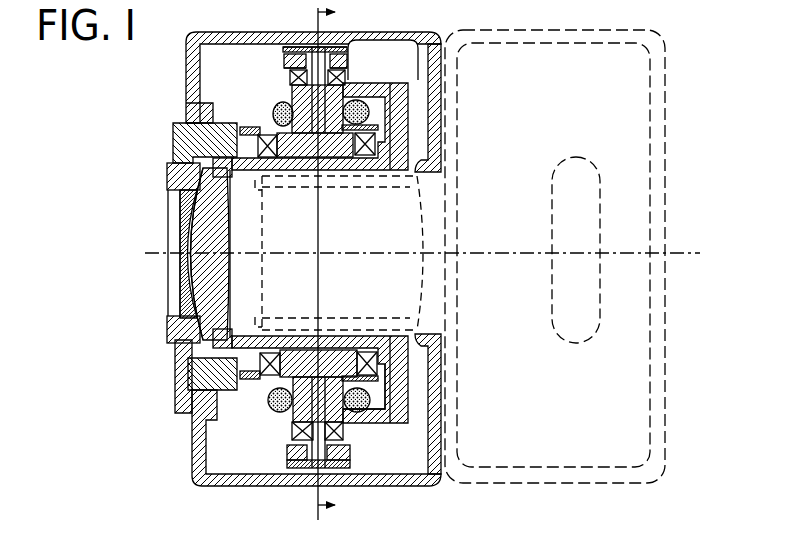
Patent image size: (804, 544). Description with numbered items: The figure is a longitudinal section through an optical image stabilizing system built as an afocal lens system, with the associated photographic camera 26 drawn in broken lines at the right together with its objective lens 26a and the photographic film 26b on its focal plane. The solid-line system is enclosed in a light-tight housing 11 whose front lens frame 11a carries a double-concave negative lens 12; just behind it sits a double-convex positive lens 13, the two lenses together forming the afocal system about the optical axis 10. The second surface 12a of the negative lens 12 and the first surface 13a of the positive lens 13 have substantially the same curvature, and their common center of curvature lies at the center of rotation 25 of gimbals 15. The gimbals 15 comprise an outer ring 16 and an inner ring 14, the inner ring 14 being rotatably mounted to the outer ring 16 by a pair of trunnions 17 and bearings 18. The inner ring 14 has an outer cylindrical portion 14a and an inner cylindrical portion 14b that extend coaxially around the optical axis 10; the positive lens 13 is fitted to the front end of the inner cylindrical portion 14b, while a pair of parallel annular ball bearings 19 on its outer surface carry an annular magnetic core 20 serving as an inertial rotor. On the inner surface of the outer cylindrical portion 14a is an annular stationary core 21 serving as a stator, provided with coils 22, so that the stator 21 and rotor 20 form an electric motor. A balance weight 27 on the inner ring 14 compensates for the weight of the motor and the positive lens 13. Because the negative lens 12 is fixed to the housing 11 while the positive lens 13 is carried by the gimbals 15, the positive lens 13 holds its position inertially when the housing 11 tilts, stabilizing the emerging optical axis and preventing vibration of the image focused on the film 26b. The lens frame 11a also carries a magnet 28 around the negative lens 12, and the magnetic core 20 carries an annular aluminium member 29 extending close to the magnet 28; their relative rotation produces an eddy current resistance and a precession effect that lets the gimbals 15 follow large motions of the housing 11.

The optical axis 10 is at (467, 252).
The light-tight housing 11 is at (417, 33).
The front lens frame 11a is at (186, 108).
The negative lens 12 is at (181, 240).
The second surface of the negative lens 12a is at (190, 218).
The positive lens 13 is at (212, 305).
The first surface of the positive lens 13a is at (191, 281).
The inner ring 14 is at (438, 46).
The outer cylindrical portion 14a is at (398, 103).
The inner cylindrical portion 14b is at (336, 253).
The gimbals 15 is at (268, 60).
The outer ring 16 is at (359, 43).
The trunnions 17 is at (344, 62).
The bearings 18 is at (285, 55).
The annular ball bearings 19 is at (270, 160).
The annular magnetic core 20 is at (293, 140).
The annular stationary core 21 is at (312, 98).
The coils 22 is at (283, 103).
The center of rotation of the gimbals 25 is at (318, 254).
The photographic camera 26 is at (585, 47).
The objective lens 26a is at (430, 297).
The photographic film 26b is at (578, 344).
The balance weight 27 is at (395, 400).
The magnet 28 is at (195, 141).
The annular aluminium member 29 is at (250, 130).